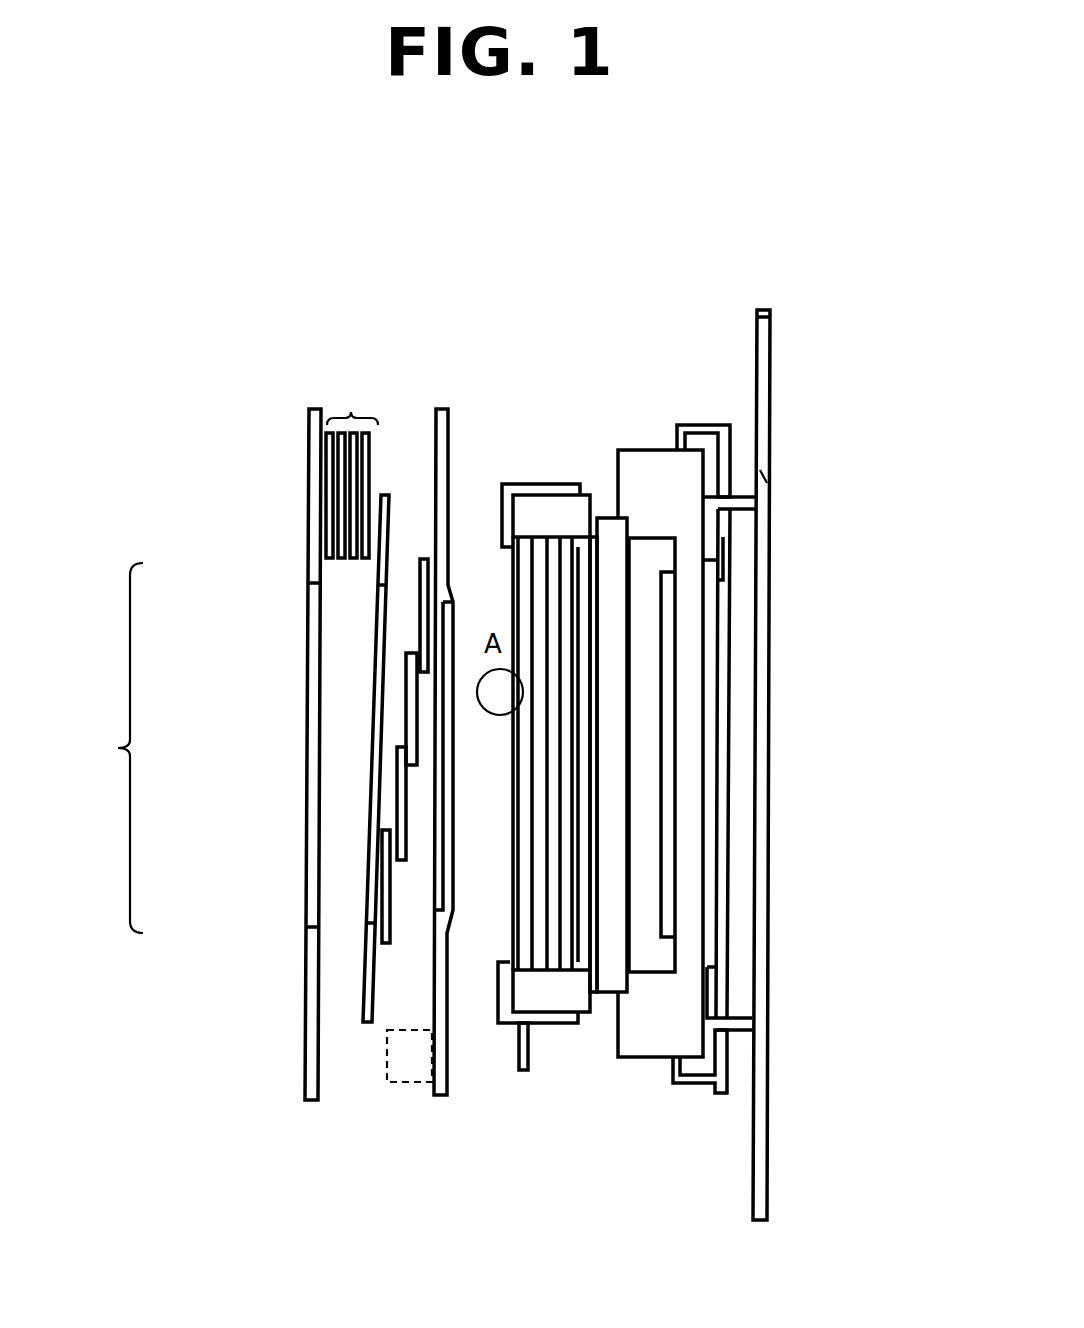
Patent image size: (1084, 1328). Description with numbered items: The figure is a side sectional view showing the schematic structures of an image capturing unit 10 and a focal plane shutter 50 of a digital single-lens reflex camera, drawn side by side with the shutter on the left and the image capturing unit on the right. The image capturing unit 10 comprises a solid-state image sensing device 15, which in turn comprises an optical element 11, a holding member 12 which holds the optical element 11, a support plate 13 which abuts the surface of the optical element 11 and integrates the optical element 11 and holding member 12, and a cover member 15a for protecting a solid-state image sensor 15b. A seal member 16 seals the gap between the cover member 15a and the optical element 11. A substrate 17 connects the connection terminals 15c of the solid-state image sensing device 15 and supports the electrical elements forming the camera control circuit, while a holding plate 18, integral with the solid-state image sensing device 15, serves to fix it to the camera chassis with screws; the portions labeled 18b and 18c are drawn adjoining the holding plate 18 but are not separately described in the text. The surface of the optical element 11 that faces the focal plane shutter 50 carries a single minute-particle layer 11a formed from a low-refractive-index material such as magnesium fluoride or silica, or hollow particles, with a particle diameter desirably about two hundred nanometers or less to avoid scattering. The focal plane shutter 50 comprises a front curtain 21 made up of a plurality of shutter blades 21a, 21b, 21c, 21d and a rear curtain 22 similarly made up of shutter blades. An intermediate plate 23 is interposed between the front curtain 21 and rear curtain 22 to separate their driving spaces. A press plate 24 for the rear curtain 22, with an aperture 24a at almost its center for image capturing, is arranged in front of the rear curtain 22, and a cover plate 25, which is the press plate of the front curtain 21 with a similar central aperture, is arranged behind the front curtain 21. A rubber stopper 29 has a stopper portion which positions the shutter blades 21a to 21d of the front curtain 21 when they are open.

The image capturing unit 10 is at (742, 215).
The optical element 11 is at (520, 580).
The single minute-particle layer 11a is at (517, 740).
The holding member 12 is at (592, 515).
The support plate 13 is at (555, 483).
The solid-state image sensing device 15 is at (649, 447).
The cover member 15a is at (612, 972).
The solid-state image sensor 15b is at (667, 877).
The connection terminals 15c is at (693, 425).
The seal member 16 is at (590, 995).
The substrate 17 is at (725, 688).
The holding plate 18 is at (772, 387).
The cover connecting portion 18b is at (771, 493).
The cover bent tab 18c is at (713, 537).
The front curtain 21 is at (106, 748).
The shutter blade 21a is at (425, 637).
The shutter blade 21b is at (407, 722).
The shutter blade 21c is at (398, 818).
The shutter blade 21d is at (382, 913).
The rear curtain 22 is at (351, 413).
The intermediate plate 23 is at (362, 980).
The press plate 24 is at (313, 410).
The aperture 24a is at (310, 920).
The cover plate 25 is at (447, 410).
The rubber stopper 29 is at (405, 1070).
The focal plane shutter 50 is at (100, 378).